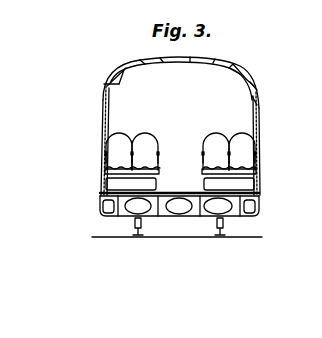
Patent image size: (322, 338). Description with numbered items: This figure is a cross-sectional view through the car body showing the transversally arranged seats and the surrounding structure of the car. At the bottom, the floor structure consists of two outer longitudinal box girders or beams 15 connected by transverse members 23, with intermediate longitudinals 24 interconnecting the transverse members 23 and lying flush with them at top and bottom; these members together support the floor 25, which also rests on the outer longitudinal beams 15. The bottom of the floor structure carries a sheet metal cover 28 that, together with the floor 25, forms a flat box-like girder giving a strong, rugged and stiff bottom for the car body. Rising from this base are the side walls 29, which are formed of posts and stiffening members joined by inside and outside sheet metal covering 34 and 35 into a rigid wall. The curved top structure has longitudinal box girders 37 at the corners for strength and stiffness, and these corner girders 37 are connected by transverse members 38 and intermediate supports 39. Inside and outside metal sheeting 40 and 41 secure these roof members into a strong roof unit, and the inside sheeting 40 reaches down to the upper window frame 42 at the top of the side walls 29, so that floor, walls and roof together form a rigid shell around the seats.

The outer longitudinal box girder 15 is at (256, 207).
The transverse member 23 is at (228, 210).
The intermediate longitudinal 24 is at (198, 212).
The floor 25 is at (172, 192).
The sheet metal cover 28 is at (217, 218).
The side wall 29 is at (101, 114).
The inside sheet metal covering 34 is at (102, 128).
The outside sheet metal covering 35 is at (103, 137).
The longitudinal box girder 37 is at (245, 77).
The transverse member 38 is at (227, 68).
The intermediate support 39 is at (234, 71).
The inside metal sheeting 40 is at (211, 66).
The outside metal sheeting 41 is at (214, 58).
The upper window frame 42 is at (102, 100).